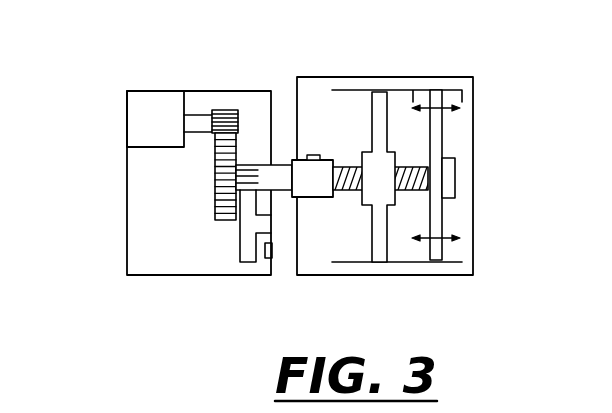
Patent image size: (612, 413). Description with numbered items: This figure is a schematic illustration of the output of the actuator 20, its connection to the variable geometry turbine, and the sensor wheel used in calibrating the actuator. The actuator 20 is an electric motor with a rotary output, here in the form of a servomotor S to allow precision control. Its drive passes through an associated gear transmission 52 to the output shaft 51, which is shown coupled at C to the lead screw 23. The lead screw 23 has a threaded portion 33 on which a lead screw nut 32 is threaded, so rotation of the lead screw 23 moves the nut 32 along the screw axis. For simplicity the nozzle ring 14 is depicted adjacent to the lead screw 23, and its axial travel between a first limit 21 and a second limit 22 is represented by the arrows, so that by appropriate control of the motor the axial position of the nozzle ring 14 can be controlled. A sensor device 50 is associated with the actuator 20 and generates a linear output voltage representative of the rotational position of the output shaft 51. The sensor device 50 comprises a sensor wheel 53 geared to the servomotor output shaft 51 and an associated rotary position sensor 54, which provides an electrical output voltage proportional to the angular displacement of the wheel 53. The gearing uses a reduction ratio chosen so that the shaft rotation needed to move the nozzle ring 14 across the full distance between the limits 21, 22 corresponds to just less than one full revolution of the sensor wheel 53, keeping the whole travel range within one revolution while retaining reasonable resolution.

The actuator 20 is at (126, 122).
The servomotor S is at (158, 107).
The gear transmission 52 is at (203, 159).
The output shaft 51 is at (260, 160).
The sensor wheel 53 is at (249, 254).
The rotary position sensor 54 is at (276, 258).
The sensor device 50 is at (229, 254).
The coupling C is at (294, 170).
The lead screw 23 is at (416, 164).
The threaded portion 33 is at (352, 108).
The lead screw nut 32 is at (385, 103).
The nozzle ring 14 is at (443, 218).
The second limit 22 is at (461, 248).
The first limit 21 is at (414, 248).